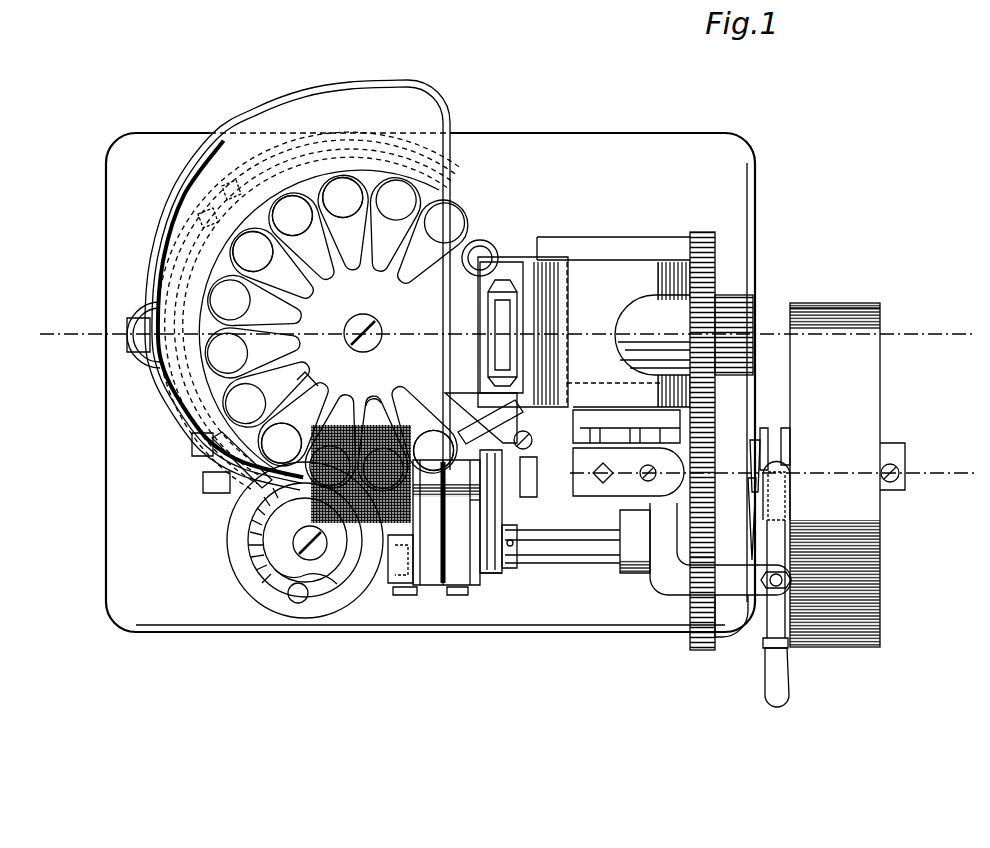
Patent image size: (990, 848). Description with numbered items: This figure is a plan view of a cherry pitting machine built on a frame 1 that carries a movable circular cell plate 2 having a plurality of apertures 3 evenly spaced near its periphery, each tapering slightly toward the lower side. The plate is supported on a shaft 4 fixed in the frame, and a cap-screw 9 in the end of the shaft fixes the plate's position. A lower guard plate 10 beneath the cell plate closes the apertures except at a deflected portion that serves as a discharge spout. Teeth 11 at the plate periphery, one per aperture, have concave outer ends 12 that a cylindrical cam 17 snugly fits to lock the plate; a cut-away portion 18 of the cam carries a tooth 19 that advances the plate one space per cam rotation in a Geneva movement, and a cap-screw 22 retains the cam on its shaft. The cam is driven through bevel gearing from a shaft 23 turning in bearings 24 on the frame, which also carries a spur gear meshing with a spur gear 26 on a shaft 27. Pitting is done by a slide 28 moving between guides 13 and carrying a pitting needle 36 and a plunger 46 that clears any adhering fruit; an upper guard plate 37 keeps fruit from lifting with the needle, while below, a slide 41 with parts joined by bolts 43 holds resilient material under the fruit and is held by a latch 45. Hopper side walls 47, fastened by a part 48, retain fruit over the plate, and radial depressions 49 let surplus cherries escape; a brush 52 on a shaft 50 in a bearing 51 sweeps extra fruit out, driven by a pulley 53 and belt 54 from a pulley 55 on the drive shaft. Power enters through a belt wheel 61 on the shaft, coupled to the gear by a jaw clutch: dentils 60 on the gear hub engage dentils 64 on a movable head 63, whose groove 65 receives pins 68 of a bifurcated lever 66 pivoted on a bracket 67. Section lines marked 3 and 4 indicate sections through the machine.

The frame 1 is at (505, 208).
The cell plate 2 is at (338, 332).
The apertures 3 is at (308, 657).
The shaft 4 is at (892, 355).
The cap-screw 9 is at (344, 332).
The guard plate 10 is at (252, 262).
The teeth 11 is at (480, 200).
The concave portion 12 is at (462, 183).
The guides 13 is at (525, 253).
The cylindrical cam 17 is at (272, 543).
The cut away portion 18 is at (288, 578).
The tooth 19 is at (290, 594).
The cap-screw 22 is at (318, 549).
The shaft 23 is at (574, 563).
The bearings 24 is at (440, 587).
The spur gear 26 is at (715, 557).
The shaft 27 is at (905, 468).
The slide 28 is at (585, 313).
The pitting needle 36 is at (701, 233).
The upper guard plate 37 is at (498, 448).
The slide 41 is at (540, 432).
The screws or bolts 43 is at (626, 424).
The latch 45 is at (532, 486).
The plunger 46 is at (485, 262).
The side walls 47 is at (195, 284).
The part 48 is at (208, 213).
The radial depression 49 is at (306, 382).
The shaft 50 is at (262, 484).
The bearing 51 is at (468, 435).
The brush 52 is at (380, 418).
The sheave or pulley 53 is at (510, 500).
The belt or band 54 is at (500, 512).
The pulley 55 is at (500, 576).
The teeth or dentils 60 is at (750, 473).
The belt wheel 61 is at (840, 306).
The head 63 is at (786, 428).
The teeth or dentils 64 is at (748, 500).
The groove 65 is at (768, 435).
The bifurcated lever 66 is at (789, 667).
The bracket 67 is at (727, 638).
The pins 68 is at (786, 468).